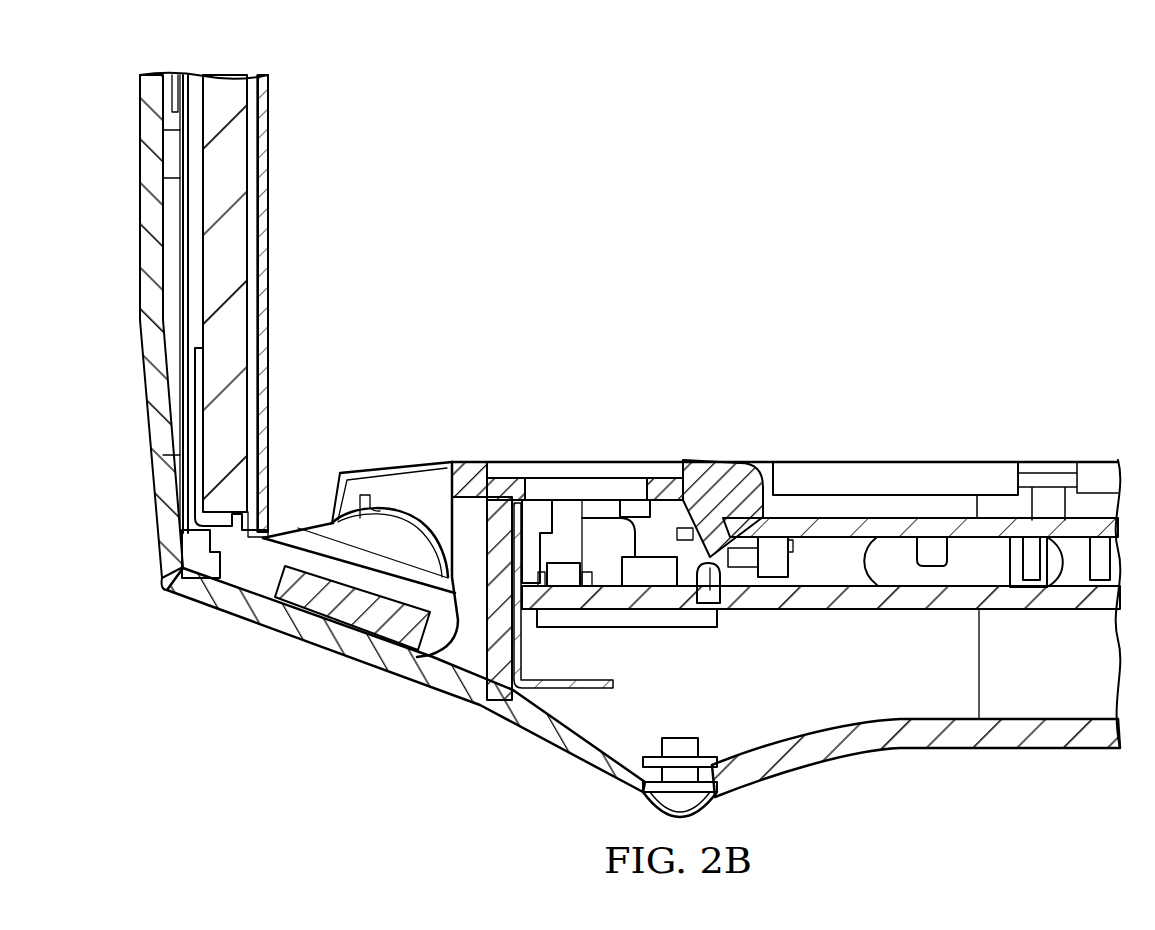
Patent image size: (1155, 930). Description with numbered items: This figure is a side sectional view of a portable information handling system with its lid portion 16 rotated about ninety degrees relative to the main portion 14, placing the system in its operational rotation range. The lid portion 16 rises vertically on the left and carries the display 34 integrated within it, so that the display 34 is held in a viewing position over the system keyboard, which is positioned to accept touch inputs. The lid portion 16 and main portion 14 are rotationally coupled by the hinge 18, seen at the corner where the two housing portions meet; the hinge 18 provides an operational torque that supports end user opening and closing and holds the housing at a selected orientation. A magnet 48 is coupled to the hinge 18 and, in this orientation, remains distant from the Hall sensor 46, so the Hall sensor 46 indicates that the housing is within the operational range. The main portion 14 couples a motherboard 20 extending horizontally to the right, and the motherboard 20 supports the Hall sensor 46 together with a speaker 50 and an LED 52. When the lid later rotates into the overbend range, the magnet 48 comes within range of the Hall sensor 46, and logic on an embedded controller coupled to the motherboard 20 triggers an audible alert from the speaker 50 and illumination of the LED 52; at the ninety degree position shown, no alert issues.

The main portion 14 is at (1047, 735).
The lid portion 16 is at (150, 228).
The hinge 18 is at (400, 492).
The motherboard 20 is at (1063, 600).
The display 34 is at (272, 251).
The Hall sensor 46 is at (563, 577).
The magnet 48 is at (343, 610).
The speaker 50 is at (642, 572).
The LED 52 is at (735, 572).